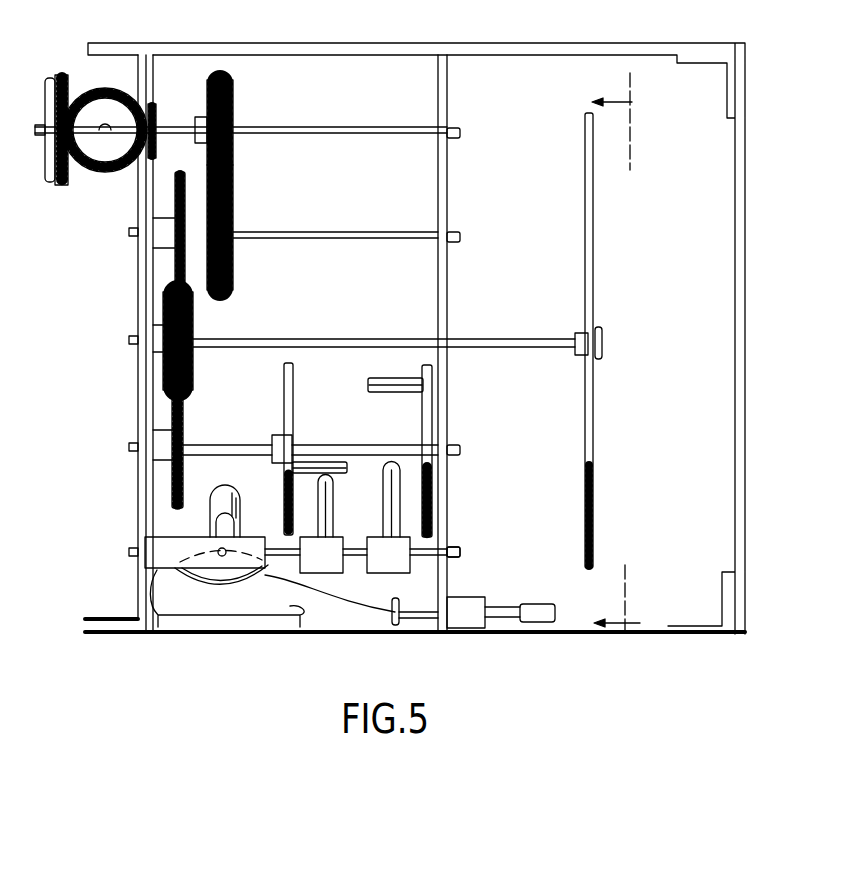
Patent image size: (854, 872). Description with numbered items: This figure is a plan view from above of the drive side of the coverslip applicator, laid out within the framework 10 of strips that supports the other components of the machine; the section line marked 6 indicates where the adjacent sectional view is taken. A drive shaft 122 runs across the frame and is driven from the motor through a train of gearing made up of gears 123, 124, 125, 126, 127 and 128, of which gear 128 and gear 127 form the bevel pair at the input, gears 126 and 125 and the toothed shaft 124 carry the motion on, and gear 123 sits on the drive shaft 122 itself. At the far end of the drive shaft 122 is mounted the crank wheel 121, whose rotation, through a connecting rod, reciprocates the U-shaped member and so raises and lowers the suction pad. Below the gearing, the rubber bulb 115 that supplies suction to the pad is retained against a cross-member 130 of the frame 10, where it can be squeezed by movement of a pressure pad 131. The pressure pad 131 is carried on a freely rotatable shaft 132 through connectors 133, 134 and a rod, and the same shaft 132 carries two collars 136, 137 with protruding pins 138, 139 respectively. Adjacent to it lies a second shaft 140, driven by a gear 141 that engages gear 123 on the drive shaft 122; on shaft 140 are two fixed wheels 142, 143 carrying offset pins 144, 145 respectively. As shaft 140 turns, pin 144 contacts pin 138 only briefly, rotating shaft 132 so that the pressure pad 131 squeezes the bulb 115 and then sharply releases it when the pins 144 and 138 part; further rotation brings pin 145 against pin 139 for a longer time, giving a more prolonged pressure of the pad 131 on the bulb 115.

The framework 10 is at (745, 262).
The section line 6- 6 is at (622, 355).
The rubber bulb 115 is at (186, 605).
The crank wheel 121 is at (593, 420).
The drive shaft 122 is at (498, 336).
The gear 123 is at (164, 374).
The gear 124 is at (176, 268).
The gear 125 is at (233, 205).
The gear 126 is at (233, 95).
The gear 127 is at (68, 186).
The gear 128 is at (96, 90).
The cross-member 130 is at (628, 638).
The pressure pad 131 is at (236, 600).
The freely rotatable shaft 132 is at (442, 562).
The connector 133 is at (220, 500).
The connector 134 is at (152, 545).
The collar 136 is at (330, 574).
The collar 137 is at (398, 574).
The protruding pin 138 is at (326, 505).
The protruding pin 139 is at (392, 462).
The shaft 140 is at (235, 446).
The gear 141 is at (173, 438).
The fixed wheel 142 is at (284, 500).
The fixed wheel 143 is at (432, 497).
The offset pin 144 is at (313, 462).
The offset pin 145 is at (416, 378).